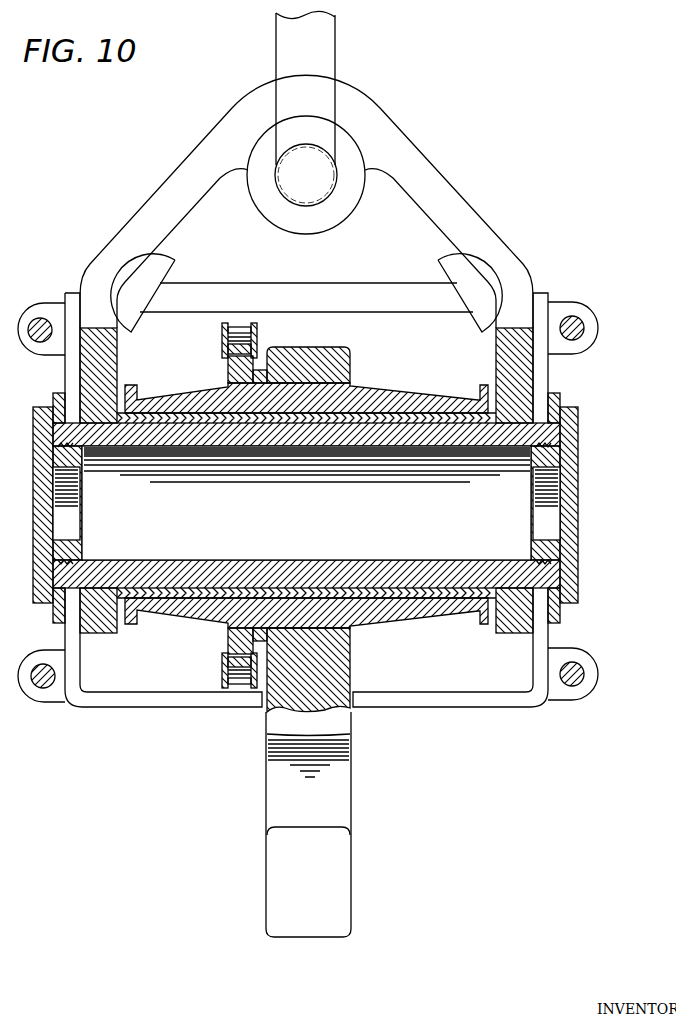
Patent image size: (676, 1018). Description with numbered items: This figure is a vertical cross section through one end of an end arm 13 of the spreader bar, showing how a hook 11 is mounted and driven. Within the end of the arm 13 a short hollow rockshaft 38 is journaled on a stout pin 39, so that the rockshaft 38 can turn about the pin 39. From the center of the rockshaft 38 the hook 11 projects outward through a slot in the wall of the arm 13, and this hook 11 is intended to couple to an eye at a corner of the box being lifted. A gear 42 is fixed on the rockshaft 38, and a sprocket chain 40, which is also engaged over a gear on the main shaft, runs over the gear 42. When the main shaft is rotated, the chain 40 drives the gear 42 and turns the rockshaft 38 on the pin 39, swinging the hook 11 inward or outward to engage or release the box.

The hook 11 is at (350, 858).
The end arm 13 is at (483, 709).
The hollow rockshaft 38 is at (386, 397).
The stout pin 39 is at (384, 523).
The sprocket chain 40 is at (222, 336).
The gear 42 is at (229, 645).